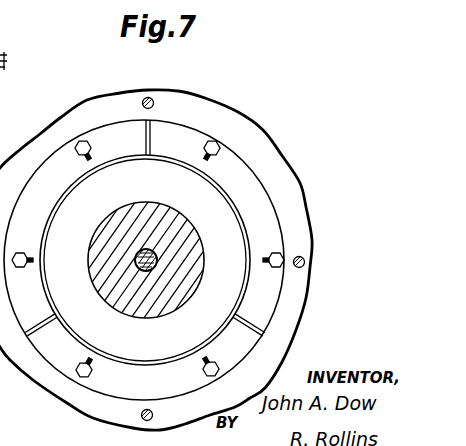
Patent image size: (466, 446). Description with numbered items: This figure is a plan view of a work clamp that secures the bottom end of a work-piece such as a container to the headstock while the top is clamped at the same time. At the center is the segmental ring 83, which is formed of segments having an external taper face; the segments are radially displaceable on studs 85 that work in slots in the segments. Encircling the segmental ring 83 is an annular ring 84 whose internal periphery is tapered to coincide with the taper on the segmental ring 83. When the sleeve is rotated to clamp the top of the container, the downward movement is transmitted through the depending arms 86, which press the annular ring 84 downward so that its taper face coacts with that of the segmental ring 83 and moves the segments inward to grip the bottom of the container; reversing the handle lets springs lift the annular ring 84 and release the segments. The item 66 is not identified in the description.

The annular ring 84 is at (87, 118).
The segmental ring 83 is at (187, 146).
The studs 85 is at (217, 144).
The depending arms 86 is at (150, 99).
The adjacent member 66 is at (6, 60).